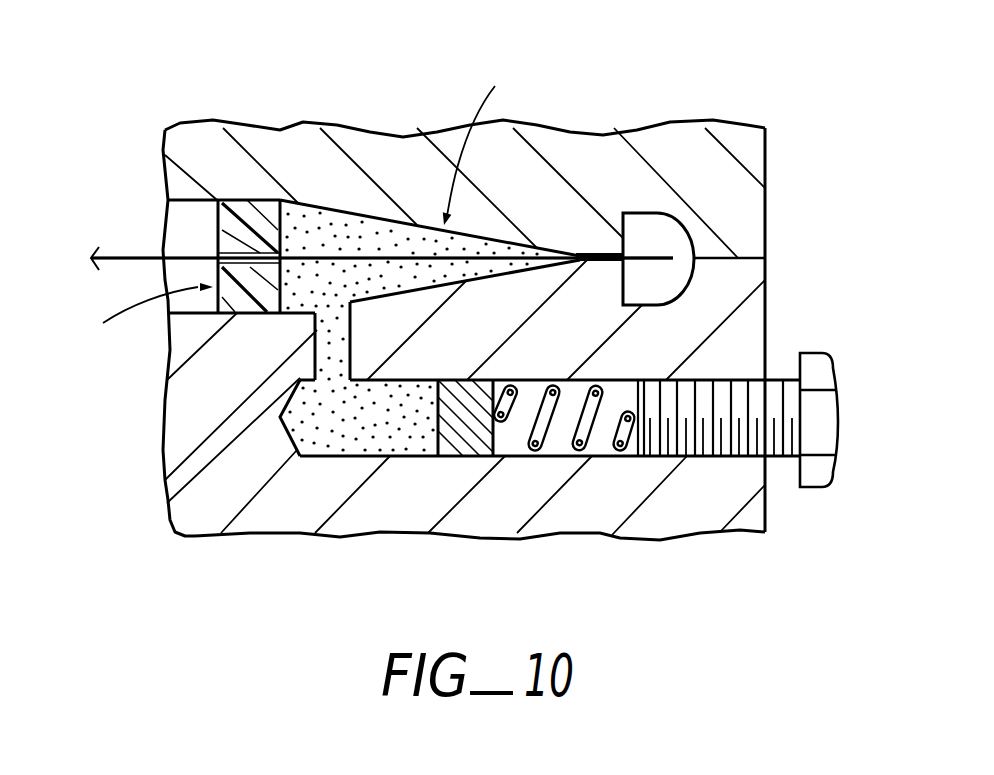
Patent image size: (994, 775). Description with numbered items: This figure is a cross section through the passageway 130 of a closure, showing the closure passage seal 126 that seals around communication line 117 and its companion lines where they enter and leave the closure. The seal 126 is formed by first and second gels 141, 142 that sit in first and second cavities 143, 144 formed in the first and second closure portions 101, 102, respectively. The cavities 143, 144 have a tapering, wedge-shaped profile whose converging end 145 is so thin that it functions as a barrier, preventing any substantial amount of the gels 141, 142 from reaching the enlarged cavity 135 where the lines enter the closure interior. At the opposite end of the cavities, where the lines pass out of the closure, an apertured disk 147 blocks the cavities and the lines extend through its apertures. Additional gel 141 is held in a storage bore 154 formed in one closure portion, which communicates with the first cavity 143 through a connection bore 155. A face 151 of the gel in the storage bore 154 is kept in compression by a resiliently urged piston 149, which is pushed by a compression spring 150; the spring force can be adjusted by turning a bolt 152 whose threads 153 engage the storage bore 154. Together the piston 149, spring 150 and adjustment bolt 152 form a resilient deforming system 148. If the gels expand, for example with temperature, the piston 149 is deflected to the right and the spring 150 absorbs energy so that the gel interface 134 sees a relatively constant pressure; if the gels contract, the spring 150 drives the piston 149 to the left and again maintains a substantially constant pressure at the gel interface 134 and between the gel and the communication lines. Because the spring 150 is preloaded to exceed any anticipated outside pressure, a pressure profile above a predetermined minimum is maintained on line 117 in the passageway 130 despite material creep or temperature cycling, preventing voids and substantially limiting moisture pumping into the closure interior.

The closure portion 101 is at (740, 475).
The closure portion 102 is at (735, 167).
The communication line 117 is at (127, 256).
The closure passage seal 126 is at (492, 146).
The passageway 130 is at (142, 322).
The gel interface 134 is at (478, 257).
The enlarged cavity 135 is at (662, 245).
The first gel 141 is at (368, 280).
The second gel 142 is at (345, 215).
The first cavity 143 is at (318, 336).
The second cavity 144 is at (307, 200).
The converging end 145 is at (600, 248).
The disk 147 is at (250, 217).
The resilient deforming system 148 is at (429, 461).
The piston 149 is at (499, 430).
The spring 150 is at (595, 425).
The face 151 is at (457, 432).
The bolt 152 is at (817, 363).
The adjusting screw 153 is at (694, 445).
The storage bore 154 is at (298, 460).
The connection bore 155 is at (168, 506).